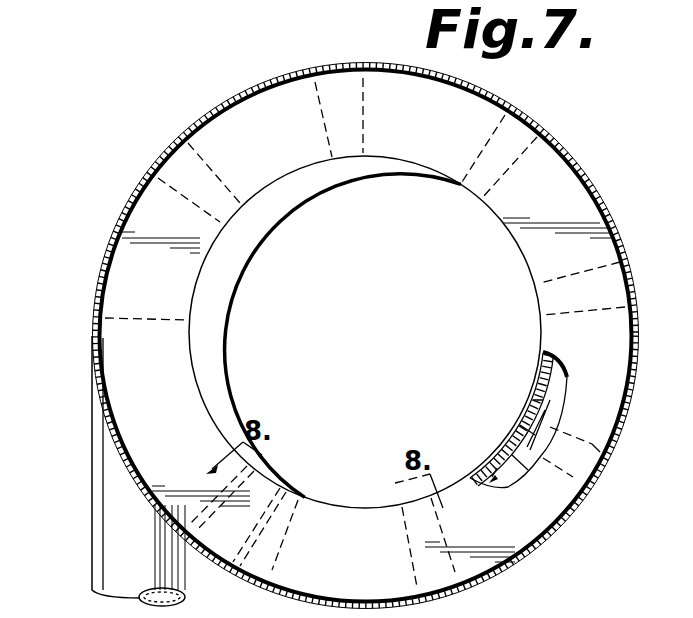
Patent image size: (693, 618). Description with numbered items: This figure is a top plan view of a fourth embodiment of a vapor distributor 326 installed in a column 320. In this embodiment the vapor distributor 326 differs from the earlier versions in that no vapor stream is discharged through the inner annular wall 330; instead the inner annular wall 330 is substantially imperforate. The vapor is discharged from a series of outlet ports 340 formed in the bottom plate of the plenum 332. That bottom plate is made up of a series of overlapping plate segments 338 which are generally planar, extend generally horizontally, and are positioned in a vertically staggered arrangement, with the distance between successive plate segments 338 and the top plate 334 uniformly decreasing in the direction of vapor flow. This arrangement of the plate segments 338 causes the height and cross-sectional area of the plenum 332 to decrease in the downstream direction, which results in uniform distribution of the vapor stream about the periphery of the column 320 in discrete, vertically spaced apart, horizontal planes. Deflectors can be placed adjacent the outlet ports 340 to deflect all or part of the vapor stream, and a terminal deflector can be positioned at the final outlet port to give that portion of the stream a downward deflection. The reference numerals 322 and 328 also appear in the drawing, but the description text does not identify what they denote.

The column 320 is at (239, 95).
The outer sheathing layer 322 is at (550, 130).
The vapor distributor 326 is at (270, 187).
The trailing strip end 328 is at (104, 528).
The inner annular wall 330 is at (197, 286).
The plenum 332 is at (482, 471).
The top plate 334 is at (190, 391).
The plate segments 338 is at (510, 427).
The outlet ports 340 is at (603, 465).